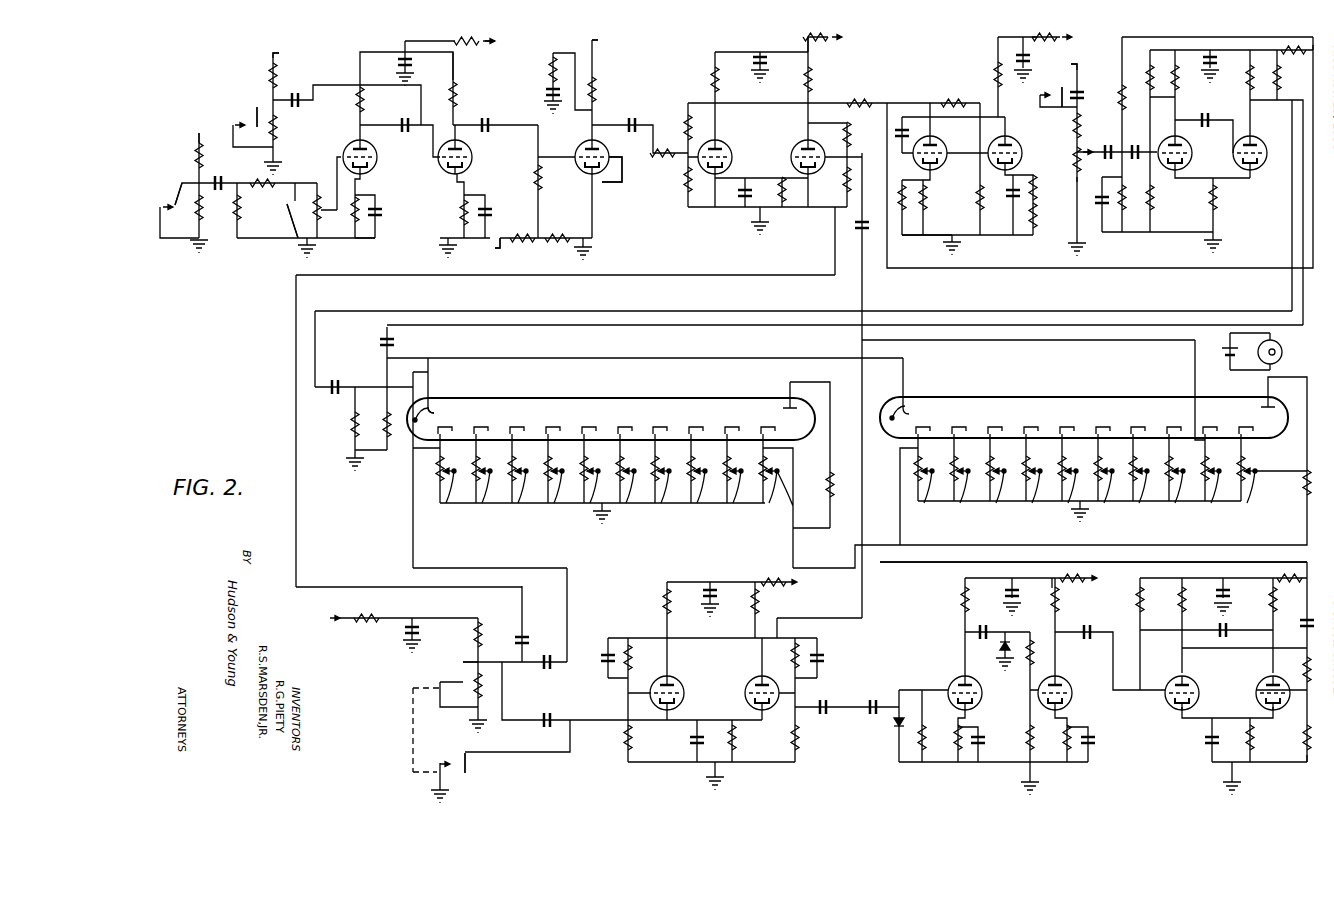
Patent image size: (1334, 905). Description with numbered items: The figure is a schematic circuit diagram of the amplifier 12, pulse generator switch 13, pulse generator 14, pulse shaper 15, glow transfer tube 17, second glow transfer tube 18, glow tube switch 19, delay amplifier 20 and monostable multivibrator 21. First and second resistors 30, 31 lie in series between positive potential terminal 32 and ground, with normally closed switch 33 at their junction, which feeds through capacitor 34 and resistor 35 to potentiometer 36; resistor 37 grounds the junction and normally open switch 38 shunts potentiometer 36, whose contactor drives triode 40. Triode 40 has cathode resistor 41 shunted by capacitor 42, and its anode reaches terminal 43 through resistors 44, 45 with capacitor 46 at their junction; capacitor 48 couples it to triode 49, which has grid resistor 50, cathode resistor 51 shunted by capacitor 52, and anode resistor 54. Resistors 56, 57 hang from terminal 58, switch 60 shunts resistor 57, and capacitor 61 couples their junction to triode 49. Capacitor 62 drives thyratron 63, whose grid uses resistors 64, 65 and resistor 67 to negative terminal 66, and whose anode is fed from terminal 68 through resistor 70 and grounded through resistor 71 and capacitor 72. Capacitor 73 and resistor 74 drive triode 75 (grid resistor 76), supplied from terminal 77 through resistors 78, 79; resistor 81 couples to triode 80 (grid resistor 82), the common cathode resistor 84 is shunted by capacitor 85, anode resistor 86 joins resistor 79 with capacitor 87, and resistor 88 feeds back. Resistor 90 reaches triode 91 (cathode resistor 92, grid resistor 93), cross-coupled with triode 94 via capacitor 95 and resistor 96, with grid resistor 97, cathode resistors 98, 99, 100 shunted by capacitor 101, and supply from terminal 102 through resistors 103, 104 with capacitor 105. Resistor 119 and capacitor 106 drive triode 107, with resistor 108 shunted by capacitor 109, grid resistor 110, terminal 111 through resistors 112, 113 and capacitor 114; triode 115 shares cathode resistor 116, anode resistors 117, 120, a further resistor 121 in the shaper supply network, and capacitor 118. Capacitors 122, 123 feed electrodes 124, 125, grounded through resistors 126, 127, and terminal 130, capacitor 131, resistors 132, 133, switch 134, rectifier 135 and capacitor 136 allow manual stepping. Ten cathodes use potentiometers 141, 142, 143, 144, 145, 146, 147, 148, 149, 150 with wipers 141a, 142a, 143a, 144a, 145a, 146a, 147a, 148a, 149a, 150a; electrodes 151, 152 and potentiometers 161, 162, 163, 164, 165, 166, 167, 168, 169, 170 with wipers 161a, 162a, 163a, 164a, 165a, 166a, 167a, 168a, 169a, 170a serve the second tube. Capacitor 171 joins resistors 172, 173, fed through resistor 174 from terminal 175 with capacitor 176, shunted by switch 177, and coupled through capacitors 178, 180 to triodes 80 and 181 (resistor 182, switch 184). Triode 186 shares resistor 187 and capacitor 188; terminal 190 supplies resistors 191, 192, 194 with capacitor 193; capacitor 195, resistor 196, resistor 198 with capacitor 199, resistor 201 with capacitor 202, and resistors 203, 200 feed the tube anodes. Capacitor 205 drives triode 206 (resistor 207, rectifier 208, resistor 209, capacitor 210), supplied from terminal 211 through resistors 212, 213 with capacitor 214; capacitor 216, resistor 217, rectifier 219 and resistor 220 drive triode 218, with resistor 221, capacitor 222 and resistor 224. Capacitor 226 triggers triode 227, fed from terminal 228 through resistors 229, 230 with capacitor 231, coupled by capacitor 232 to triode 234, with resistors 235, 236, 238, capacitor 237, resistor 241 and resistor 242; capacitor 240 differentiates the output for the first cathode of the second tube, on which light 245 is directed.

The amplifier 12 is at (212, 95).
The pulse generator switch 13 is at (666, 105).
The pulse generator 14 is at (909, 89).
The pulse shaper 15 is at (1266, 237).
The glow transfer tube 17 is at (611, 407).
The second glow transfer tube 18 is at (1084, 406).
The glow tube switch 19 is at (576, 814).
The delay amplifier 20 is at (931, 810).
The monostable multivibrator 21 is at (1151, 810).
The first resistor 30 is at (183, 152).
The second resistor 31 is at (211, 215).
The positive potential terminal 32 is at (184, 129).
The normally closed switch 33 is at (169, 190).
The capacitor 34 is at (232, 174).
The resistor 35 is at (276, 176).
The potentiometer 36 is at (315, 192).
The resistor 37 is at (251, 207).
The normally open switch 38 is at (279, 221).
The triode 40 is at (349, 145).
The resistor 41 is at (377, 230).
The capacitor 42 is at (381, 206).
The positive potential terminal 43 is at (490, 40).
The resistor 44 is at (376, 99).
The resistor 45 is at (473, 65).
The capacitor 46 is at (389, 67).
The capacitor 48 is at (395, 137).
The triode 49 is at (474, 157).
The resistor 50 is at (391, 210).
The resistor 51 is at (474, 226).
The capacitor 52 is at (501, 201).
The resistor 54 is at (469, 90).
The resistor 56 is at (287, 74).
The resistor 57 is at (288, 136).
The positive potential terminal 58 is at (289, 52).
The normally open switch 60 is at (242, 114).
The capacitor 61 is at (303, 114).
The capacitor 62 is at (478, 112).
The thyratron 63 is at (614, 180).
The resistor 64 is at (521, 176).
The resistor 65 is at (557, 222).
The negative potential terminal 66 is at (512, 249).
The resistor 67 is at (520, 225).
The positive potential terminal 68 is at (603, 67).
The resistor 70 is at (581, 144).
The resistor 71 is at (542, 69).
The capacitor 72 is at (537, 92).
The capacitor 73 is at (621, 112).
The resistor 74 is at (658, 163).
The triode 75 is at (713, 141).
The resistor 76 is at (670, 181).
The positive potential terminal 77 is at (836, 38).
The resistor 78 is at (730, 82).
The resistor 79 is at (823, 51).
The triode 80 is at (814, 141).
The resistor 81 is at (861, 133).
The resistor 82 is at (828, 184).
The resistor 84 is at (796, 203).
The capacitor 85 is at (727, 195).
The resistor 86 is at (790, 82).
The capacitor 87 is at (744, 63).
The resistor 88 is at (672, 127).
The resistor 90 is at (864, 94).
The triode 91 is at (922, 173).
The resistor 92 is at (939, 205).
The resistor 93 is at (924, 247).
The triode 94 is at (1016, 145).
The capacitor 95 is at (904, 122).
The resistor 96 is at (944, 94).
The resistor 97 is at (965, 197).
The resistor 98 is at (1045, 187).
The resistor 99 is at (1047, 197).
The resistor 100 is at (1045, 215).
The capacitor 101 is at (1004, 205).
The positive potential terminal 102 is at (1072, 35).
The resistor 103 is at (980, 75).
The resistor 104 is at (1052, 50).
The capacitor 105 is at (1000, 51).
The capacitor 106 is at (1135, 137).
The triode 107 is at (1171, 135).
The resistor 108 is at (1142, 221).
The capacitor 109 is at (1107, 219).
The resistor 110 is at (1168, 205).
The positive potential terminal 111 is at (1300, 59).
The resistor 112 is at (1140, 72).
The resistor 113 is at (1276, 45).
The capacitor 114 is at (1193, 50).
The triode 115 is at (1260, 159).
The resistor 116 is at (1196, 197).
The resistor 117 is at (1190, 82).
The capacitor 118 is at (1216, 132).
The resistor 119 is at (1104, 100).
The resistor 120 is at (1261, 72).
The resistor 121 is at (1293, 78).
The capacitor 122 is at (357, 345).
The capacitor 123 is at (319, 399).
The electrode 124 is at (446, 396).
The electrode 125 is at (440, 417).
The resistor 126 is at (374, 416).
The resistor 127 is at (335, 426).
The positive potential terminal 130 is at (1093, 59).
The capacitor 131 is at (1092, 86).
The resistor 132 is at (1058, 151).
The resistor 133 is at (1056, 171).
The normally open switch 134 is at (1046, 91).
The rectifier 135 is at (1070, 152).
The capacitor 136 is at (1094, 125).
The potentiometer 141 is at (452, 463).
The potentiometer 142 is at (488, 463).
The potentiometer 143 is at (524, 463).
The potentiometer 144 is at (560, 463).
The potentiometer 145 is at (596, 463).
The potentiometer 146 is at (632, 463).
The potentiometer 147 is at (668, 463).
The potentiometer 148 is at (704, 463).
The potentiometer 149 is at (740, 463).
The potentiometer 150 is at (793, 468).
The wiper 141a is at (435, 496).
The wiper 142a is at (469, 504).
The wiper 143a is at (505, 496).
The wiper 144a is at (536, 504).
The wiper 145a is at (574, 496).
The wiper 146a is at (636, 500).
The wiper 147a is at (671, 496).
The wiper 148a is at (709, 501).
The wiper 149a is at (750, 496).
The wiper 150a is at (798, 495).
The electrode 151 is at (924, 397).
The electrode 152 is at (918, 413).
The potentiometer 161 is at (907, 468).
The potentiometer 162 is at (941, 463).
The potentiometer 163 is at (977, 463).
The potentiometer 164 is at (1013, 463).
The potentiometer 165 is at (1049, 463).
The potentiometer 166 is at (1085, 463).
The potentiometer 167 is at (1121, 463).
The potentiometer 168 is at (1157, 463).
The potentiometer 169 is at (1218, 463).
The potentiometer 170 is at (1257, 463).
The wiper 161a is at (919, 495).
The wiper 162a is at (945, 504).
The wiper 163a is at (983, 495).
The wiper 164a is at (1013, 504).
The wiper 165a is at (1051, 495).
The wiper 166a is at (1109, 499).
The wiper 167a is at (1158, 499).
The wiper 168a is at (1202, 499).
The wiper 169a is at (1246, 491).
The wiper 170a is at (1266, 485).
The capacitor 171 is at (563, 671).
The resistor 172 is at (495, 632).
The resistor 173 is at (503, 685).
The resistor 174 is at (361, 628).
The positive potential terminal 175 is at (320, 618).
The capacitor 176 is at (437, 632).
The normally closed switch 177 is at (455, 657).
The capacitor 178 is at (539, 630).
The capacitor 180 is at (531, 731).
The triode 181 is at (638, 695).
The resistor 182 is at (605, 738).
The normally open switch 184 is at (471, 766).
The triode 186 is at (762, 709).
The resistor 187 is at (750, 742).
The capacitor 188 is at (672, 742).
The positive potential terminal 190 is at (806, 578).
The resistor 191 is at (644, 601).
The resistor 192 is at (784, 591).
The capacitor 193 is at (694, 581).
The resistor 194 is at (738, 610).
The capacitor 195 is at (833, 716).
The resistor 196 is at (814, 740).
The resistor 198 is at (643, 657).
The capacitor 199 is at (592, 643).
The resistor 200 is at (1289, 478).
The resistor 201 is at (780, 655).
The capacitor 202 is at (846, 649).
The resistor 203 is at (816, 484).
The capacitor 205 is at (887, 694).
The triode 206 is at (948, 678).
The resistor 207 is at (894, 745).
The rectifier 208 is at (878, 732).
The resistor 209 is at (945, 732).
The capacitor 210 is at (1013, 733).
The positive potential terminal 211 is at (1093, 577).
The resistor 212 is at (945, 599).
The resistor 213 is at (1085, 590).
The capacitor 214 is at (994, 581).
The capacitor 216 is at (955, 627).
The resistor 217 is at (1013, 665).
The triode 218 is at (1073, 687).
The rectifier 219 is at (1021, 633).
The resistor 220 is at (991, 749).
The resistor 221 is at (1086, 725).
The capacitor 222 is at (1106, 748).
The resistor 224 is at (1074, 602).
The capacitor 226 is at (1075, 643).
The triode 227 is at (1210, 701).
The positive potential terminal 228 is at (1093, 558).
The resistor 229 is at (1152, 599).
The resistor 230 is at (1264, 573).
The capacitor 231 is at (1239, 593).
The capacitor 232 is at (1240, 637).
The triode 234 is at (1266, 737).
The resistor 235 is at (1164, 608).
The resistor 236 is at (1284, 766).
The capacitor 237 is at (1189, 746).
The resistor 238 is at (1256, 607).
The capacitor 240 is at (1297, 635).
The resistor 241 is at (1292, 668).
The resistor 242 is at (1286, 740).
The light 245 is at (1262, 351).